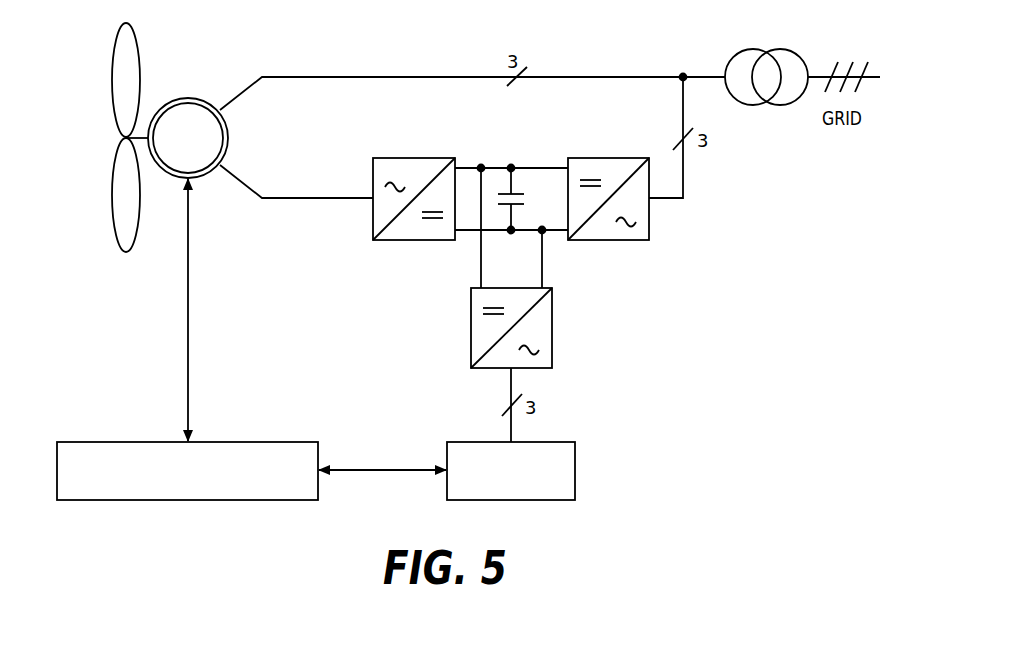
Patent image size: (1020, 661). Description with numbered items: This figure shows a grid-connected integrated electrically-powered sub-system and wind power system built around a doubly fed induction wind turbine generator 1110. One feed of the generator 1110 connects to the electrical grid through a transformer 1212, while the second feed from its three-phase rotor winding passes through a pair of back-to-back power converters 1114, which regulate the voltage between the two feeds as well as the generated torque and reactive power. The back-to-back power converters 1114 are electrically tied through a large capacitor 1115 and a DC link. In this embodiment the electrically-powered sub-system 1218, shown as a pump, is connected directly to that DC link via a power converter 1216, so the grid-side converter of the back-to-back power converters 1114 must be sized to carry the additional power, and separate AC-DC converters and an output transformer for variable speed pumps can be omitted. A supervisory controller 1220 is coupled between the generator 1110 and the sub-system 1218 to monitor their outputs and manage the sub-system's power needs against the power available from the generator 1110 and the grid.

The doubly fed induction wind turbine generator 1110 is at (187, 95).
The back-to-back power converters 1114 is at (412, 158).
The capacitor 1115 is at (516, 192).
The transformer 1212 is at (780, 48).
The power converter 1216 is at (555, 331).
The electrically-powered sub-system 1218 is at (579, 471).
The supervisory controller 1220 is at (247, 440).